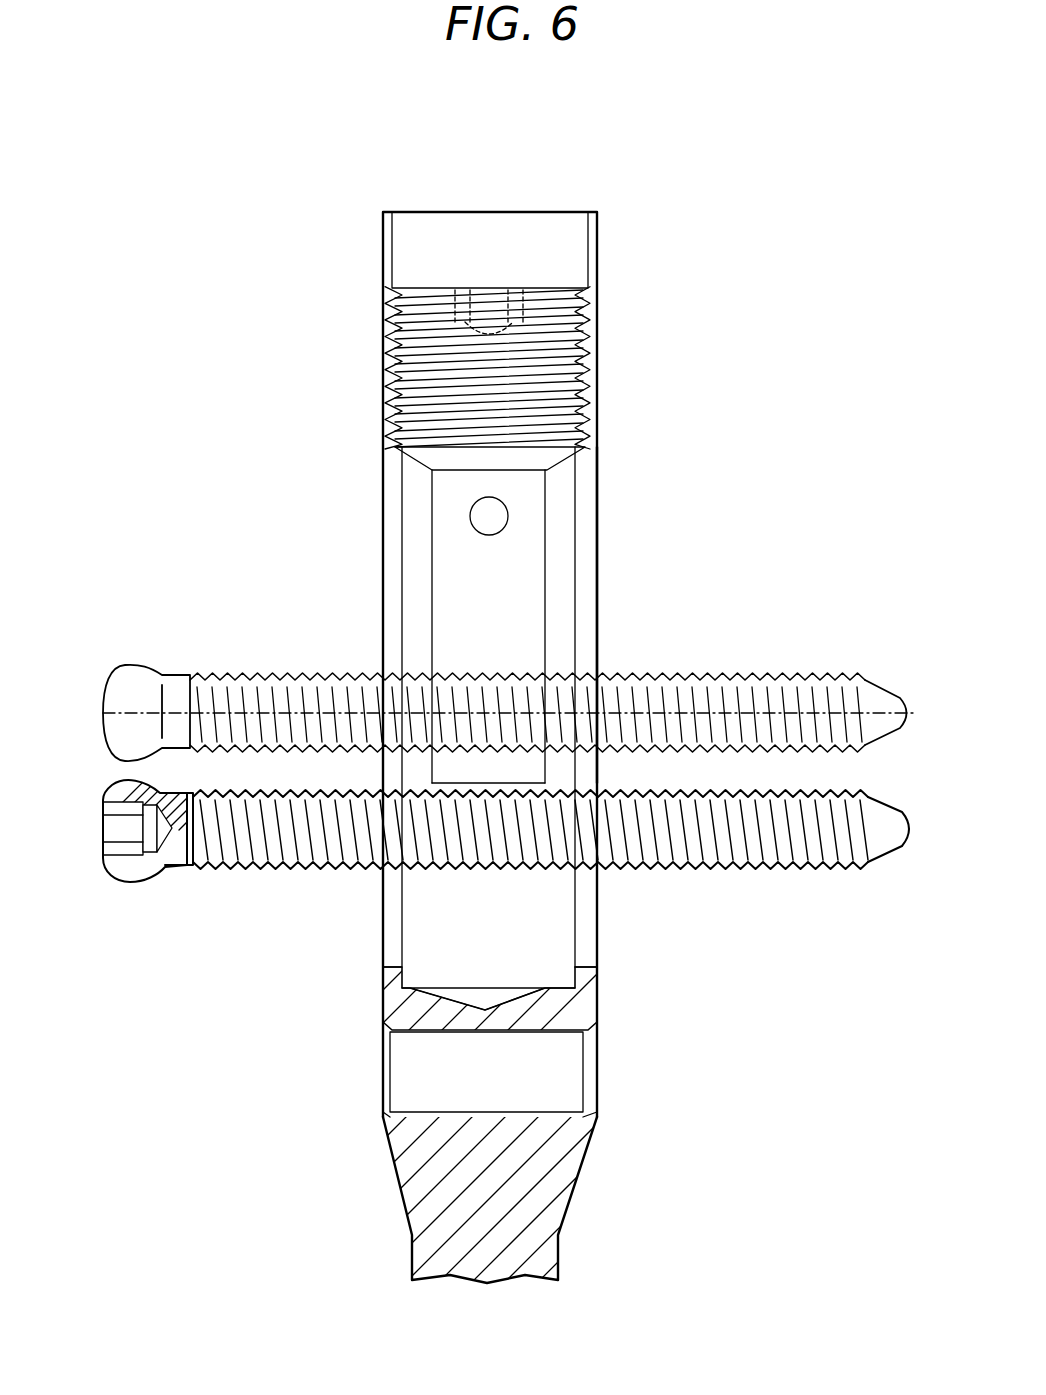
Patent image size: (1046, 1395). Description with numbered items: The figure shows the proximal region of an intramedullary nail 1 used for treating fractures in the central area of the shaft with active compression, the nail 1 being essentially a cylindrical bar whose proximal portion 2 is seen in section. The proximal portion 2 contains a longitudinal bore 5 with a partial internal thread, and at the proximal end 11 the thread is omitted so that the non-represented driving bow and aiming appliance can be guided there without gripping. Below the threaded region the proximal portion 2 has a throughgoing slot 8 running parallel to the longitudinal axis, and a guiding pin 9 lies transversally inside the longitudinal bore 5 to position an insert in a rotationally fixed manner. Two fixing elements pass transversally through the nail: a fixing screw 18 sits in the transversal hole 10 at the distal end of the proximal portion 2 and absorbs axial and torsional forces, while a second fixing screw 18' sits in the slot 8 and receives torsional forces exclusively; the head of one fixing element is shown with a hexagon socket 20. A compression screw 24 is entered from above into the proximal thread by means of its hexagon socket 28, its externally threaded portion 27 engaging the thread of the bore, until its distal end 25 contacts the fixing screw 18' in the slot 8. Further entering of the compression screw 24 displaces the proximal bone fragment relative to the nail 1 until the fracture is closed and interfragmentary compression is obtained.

The nail 1 is at (365, 388).
The proximal portion 2 is at (622, 428).
The longitudinal bore 5 is at (575, 633).
The throughgoing slot 8 is at (585, 655).
The guiding pin 9 is at (482, 517).
The transversal hole 10 is at (533, 1075).
The proximal end 11 is at (590, 242).
The fixing screw 18 is at (551, 871).
The second fixing screw 18' is at (508, 681).
The hexagon socket 20 is at (110, 830).
The compression screw 24 is at (528, 530).
The distal end 25 is at (543, 787).
The externally threaded portion 27 is at (583, 340).
The hexagon socket 28 is at (488, 298).